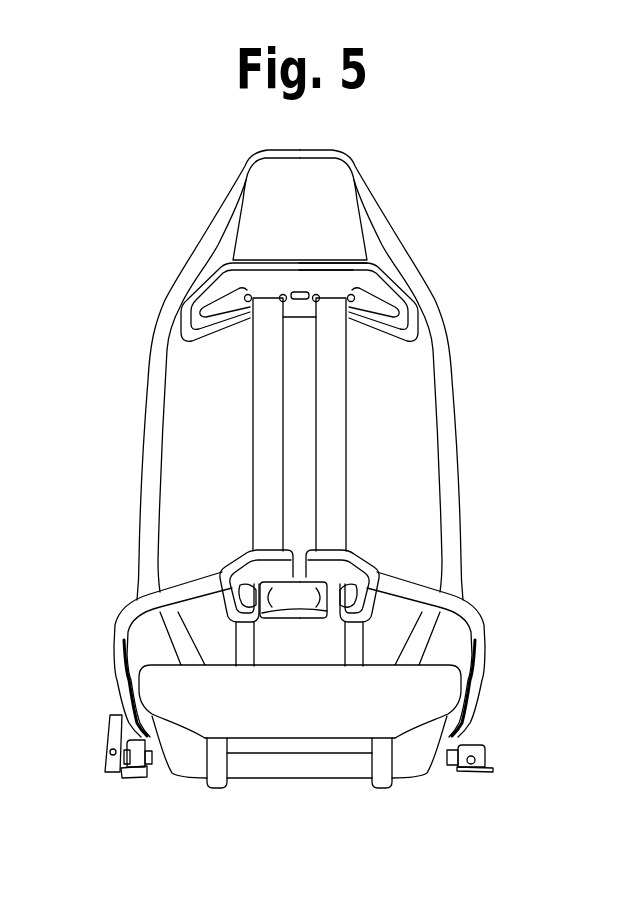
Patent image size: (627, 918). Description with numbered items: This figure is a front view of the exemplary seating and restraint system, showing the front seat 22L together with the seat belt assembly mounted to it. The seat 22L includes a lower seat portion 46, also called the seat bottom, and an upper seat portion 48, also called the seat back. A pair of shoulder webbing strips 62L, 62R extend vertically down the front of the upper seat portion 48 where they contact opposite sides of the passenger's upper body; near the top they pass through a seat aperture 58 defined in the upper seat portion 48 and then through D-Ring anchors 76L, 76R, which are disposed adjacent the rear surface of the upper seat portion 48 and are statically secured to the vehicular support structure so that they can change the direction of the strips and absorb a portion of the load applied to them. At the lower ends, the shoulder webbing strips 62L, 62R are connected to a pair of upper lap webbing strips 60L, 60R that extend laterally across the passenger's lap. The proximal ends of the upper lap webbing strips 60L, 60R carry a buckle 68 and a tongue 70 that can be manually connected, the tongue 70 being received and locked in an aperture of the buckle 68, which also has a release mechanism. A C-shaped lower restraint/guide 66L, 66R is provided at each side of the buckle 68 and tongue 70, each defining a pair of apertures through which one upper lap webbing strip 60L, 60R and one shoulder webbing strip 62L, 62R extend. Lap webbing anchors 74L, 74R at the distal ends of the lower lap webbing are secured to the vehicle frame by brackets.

The front seat 22L is at (293, 750).
The lower seat portion 46 is at (190, 720).
The upper seat portion 48 is at (384, 186).
The seat aperture 58 is at (377, 303).
The upper lap webbing strip 60R is at (122, 620).
The upper lap webbing strip 60L is at (478, 624).
The shoulder webbing strip 62R is at (262, 422).
The shoulder webbing strip 62L is at (338, 422).
The lower restraint/guide 66R is at (250, 567).
The lower restraint/guide 66L is at (350, 567).
The buckle 68 is at (285, 595).
The tongue 70 is at (332, 597).
The lap webbing anchor 74R is at (103, 747).
The lap webbing anchor 74L is at (490, 757).
The D-Ring anchor 76R is at (248, 297).
The D-Ring anchor 76L is at (351, 297).